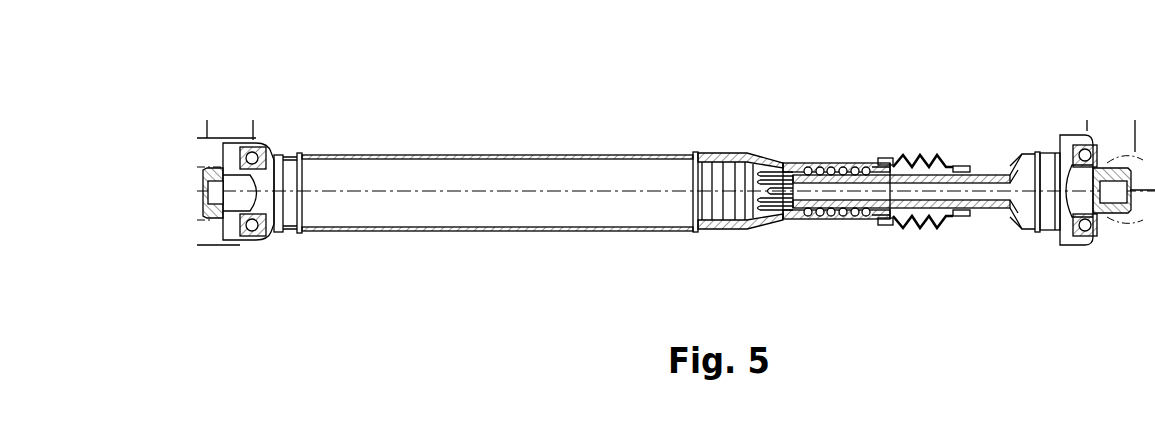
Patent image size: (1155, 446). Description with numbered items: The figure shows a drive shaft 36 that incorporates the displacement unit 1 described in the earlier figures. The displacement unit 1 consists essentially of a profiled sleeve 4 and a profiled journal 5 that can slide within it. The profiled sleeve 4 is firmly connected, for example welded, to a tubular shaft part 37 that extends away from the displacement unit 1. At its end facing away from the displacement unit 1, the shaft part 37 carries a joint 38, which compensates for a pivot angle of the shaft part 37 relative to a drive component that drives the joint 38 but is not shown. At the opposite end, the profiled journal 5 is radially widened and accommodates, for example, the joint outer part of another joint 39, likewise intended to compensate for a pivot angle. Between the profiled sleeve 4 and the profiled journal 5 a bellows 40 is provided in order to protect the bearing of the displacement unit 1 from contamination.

The displacement unit 1 is at (813, 161).
The profiled sleeve 4 is at (731, 232).
The profiled journal 5 is at (815, 218).
The drive shaft 36 is at (948, 112).
The tubular shaft part 37 is at (543, 231).
The joint 38 is at (290, 233).
The joint 39 is at (1100, 242).
The bellows 40 is at (932, 222).